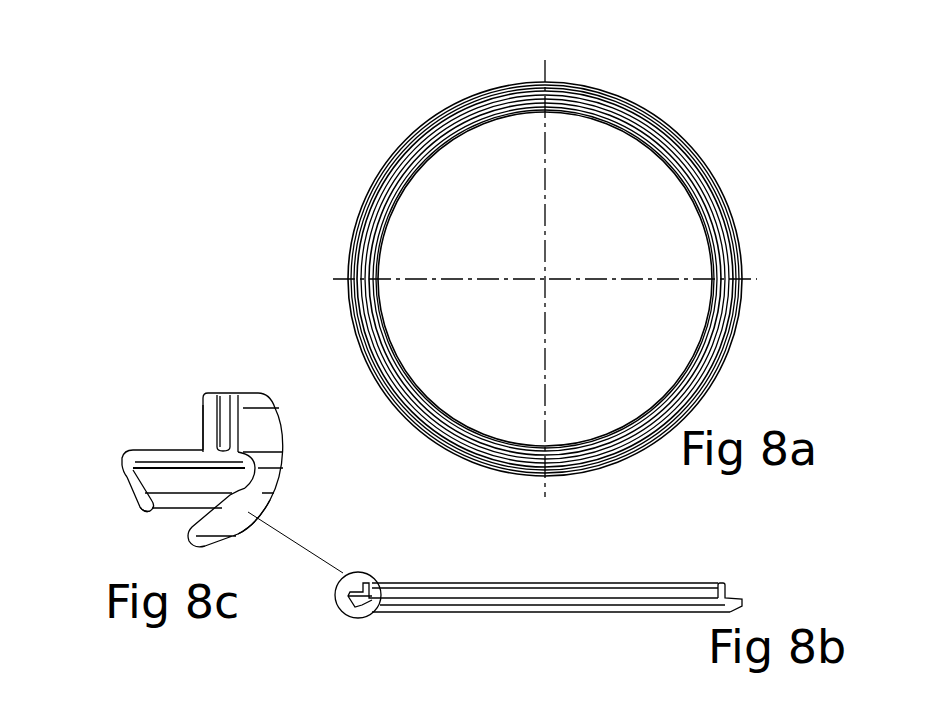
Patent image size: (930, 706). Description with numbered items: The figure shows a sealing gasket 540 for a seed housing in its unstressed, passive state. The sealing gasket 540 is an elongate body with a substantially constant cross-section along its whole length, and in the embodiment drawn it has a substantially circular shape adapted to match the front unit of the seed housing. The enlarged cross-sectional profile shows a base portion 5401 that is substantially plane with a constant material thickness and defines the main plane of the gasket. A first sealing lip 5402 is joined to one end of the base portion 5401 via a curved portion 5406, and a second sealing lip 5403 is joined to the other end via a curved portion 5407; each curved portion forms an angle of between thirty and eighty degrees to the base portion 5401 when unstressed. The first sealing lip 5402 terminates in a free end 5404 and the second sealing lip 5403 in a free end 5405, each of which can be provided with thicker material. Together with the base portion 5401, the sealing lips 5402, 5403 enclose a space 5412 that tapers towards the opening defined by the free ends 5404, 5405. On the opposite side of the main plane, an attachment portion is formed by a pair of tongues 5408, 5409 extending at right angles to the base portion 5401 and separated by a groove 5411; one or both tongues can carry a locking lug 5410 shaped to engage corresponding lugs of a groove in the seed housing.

In FIG. 8A, the sealing gasket 540 is at (665, 128).
In FIG. 8B, the sealing gasket 540 is at (620, 585).
In FIG. 8C, the sealing gasket 540 is at (205, 415).
In FIG. 8C, the base portion 5401 is at (153, 450).
In FIG. 8C, the first sealing lip 5402 is at (130, 486).
In FIG. 8C, the second sealing lip 5403 is at (290, 539).
In FIG. 8C, the free end 5404 is at (148, 515).
In FIG. 8C, the free end 5405 is at (203, 545).
In FIG. 8C, the curved portion 5406 is at (120, 462).
In FIG. 8C, the curved portion 5407 is at (262, 464).
In FIG. 8C, the tongue 5408 is at (263, 398).
In FIG. 8C, the tongue 5409 is at (206, 400).
In FIG. 8C, the locking lug 5410 is at (200, 415).
In FIG. 8C, the groove 5411 is at (230, 398).
In FIG. 8C, the space 5412 is at (193, 481).